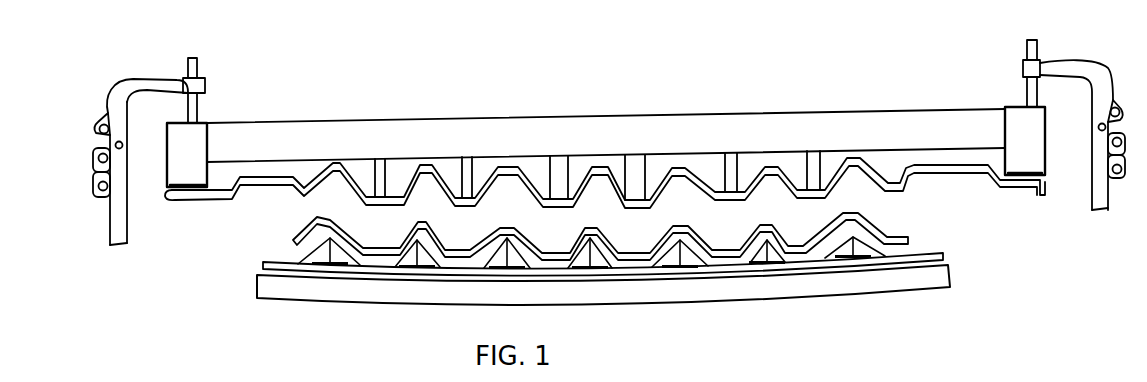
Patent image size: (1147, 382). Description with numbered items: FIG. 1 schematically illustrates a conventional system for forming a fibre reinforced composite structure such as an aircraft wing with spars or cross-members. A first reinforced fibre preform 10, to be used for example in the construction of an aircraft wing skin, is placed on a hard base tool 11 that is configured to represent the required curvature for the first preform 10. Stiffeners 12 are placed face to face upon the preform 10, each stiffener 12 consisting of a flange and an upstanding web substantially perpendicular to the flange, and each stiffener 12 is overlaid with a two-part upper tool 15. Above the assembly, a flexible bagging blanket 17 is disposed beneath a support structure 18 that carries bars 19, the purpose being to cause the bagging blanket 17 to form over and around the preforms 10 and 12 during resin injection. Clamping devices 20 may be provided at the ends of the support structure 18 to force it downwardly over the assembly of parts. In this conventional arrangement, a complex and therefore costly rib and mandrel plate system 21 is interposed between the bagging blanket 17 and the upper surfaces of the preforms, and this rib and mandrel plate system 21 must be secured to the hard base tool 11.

The first reinforced fibre preform 10 is at (923, 257).
The hard base tool 11 is at (923, 277).
The stiffener 12 is at (863, 245).
The two-part upper tool 15 is at (668, 257).
The flexible bagging blanket 17 is at (943, 167).
The support structure 18 is at (954, 130).
The bars 19 is at (733, 170).
The clamping device 20 is at (1113, 74).
The rib and mandrel plate system 21 is at (802, 246).